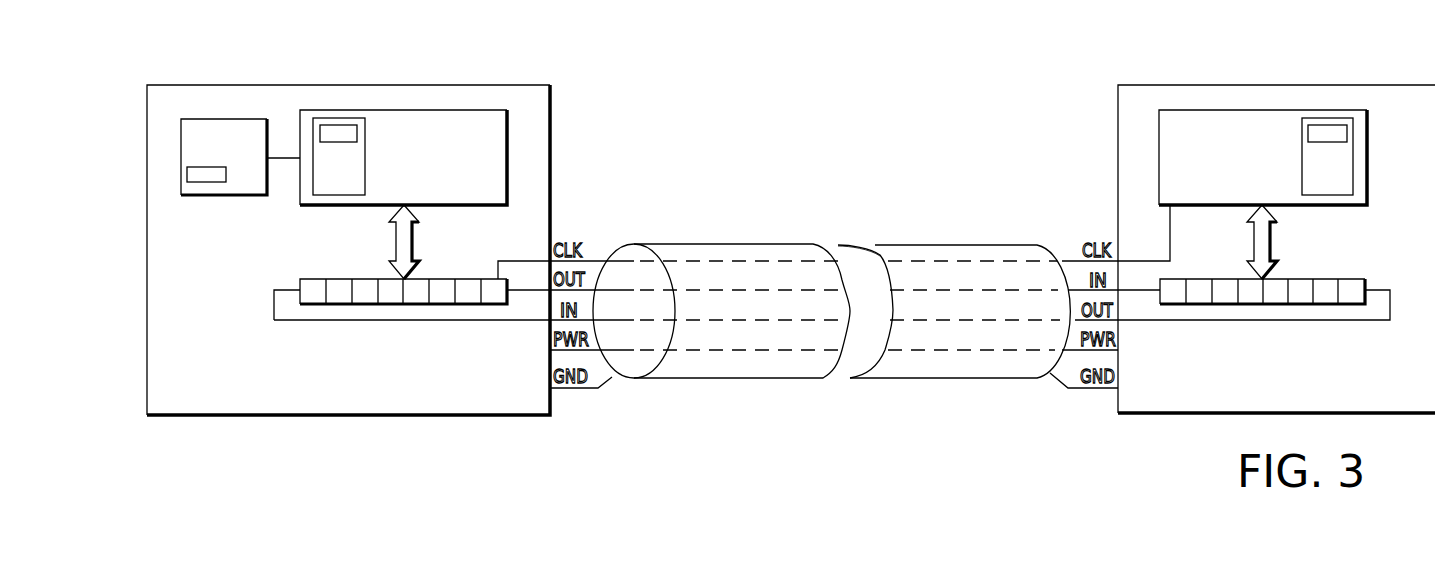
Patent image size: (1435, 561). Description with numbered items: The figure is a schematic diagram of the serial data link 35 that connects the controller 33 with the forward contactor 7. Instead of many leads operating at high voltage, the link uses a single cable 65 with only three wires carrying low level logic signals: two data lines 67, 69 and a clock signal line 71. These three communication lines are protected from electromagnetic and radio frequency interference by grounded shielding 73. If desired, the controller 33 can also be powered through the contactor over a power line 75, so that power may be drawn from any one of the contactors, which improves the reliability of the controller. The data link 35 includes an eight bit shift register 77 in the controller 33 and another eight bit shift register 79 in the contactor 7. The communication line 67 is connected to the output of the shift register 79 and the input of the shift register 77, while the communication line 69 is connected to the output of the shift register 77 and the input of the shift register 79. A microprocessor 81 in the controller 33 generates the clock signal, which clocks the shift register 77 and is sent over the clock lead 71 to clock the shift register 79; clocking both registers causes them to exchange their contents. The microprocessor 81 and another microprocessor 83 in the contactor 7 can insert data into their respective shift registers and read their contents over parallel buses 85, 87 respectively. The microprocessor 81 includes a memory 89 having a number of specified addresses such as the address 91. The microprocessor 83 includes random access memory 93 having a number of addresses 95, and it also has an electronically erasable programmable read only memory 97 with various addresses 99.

The forward contactor 7 is at (381, 85).
The controller 33 is at (1196, 85).
The serial data link 35 is at (939, 127).
The cable 65 is at (759, 232).
The data line 67 is at (623, 290).
The data line 69 is at (647, 322).
The clock signal line 71 is at (532, 261).
The grounded shielding 73 is at (877, 243).
The power line 75 is at (628, 352).
The eight bit shift register 77 is at (1322, 305).
The eight bit shift register 79 is at (317, 279).
The microprocessor 81 is at (1367, 172).
The microprocessor 83 is at (478, 110).
The parallel bus 85 is at (1277, 240).
The parallel bus 87 is at (392, 243).
The memory 89 is at (1353, 147).
The specified address 91 is at (1327, 125).
The random access memory 93 is at (327, 195).
The address 95 is at (343, 125).
The electronically erasable programmable read only memory 97 is at (220, 118).
The address 99 is at (187, 183).